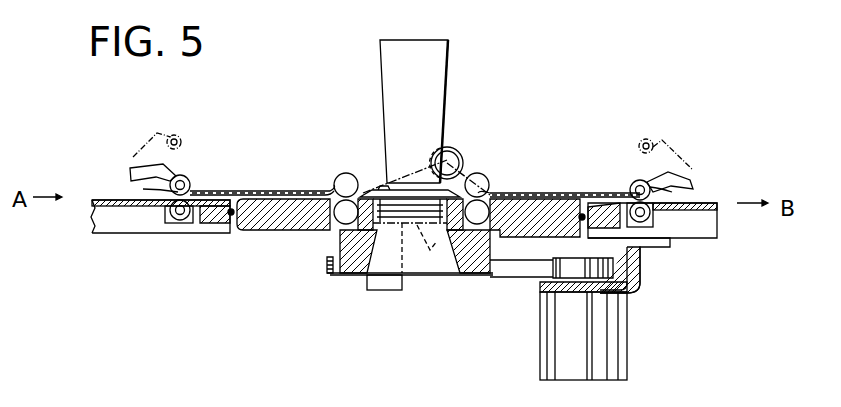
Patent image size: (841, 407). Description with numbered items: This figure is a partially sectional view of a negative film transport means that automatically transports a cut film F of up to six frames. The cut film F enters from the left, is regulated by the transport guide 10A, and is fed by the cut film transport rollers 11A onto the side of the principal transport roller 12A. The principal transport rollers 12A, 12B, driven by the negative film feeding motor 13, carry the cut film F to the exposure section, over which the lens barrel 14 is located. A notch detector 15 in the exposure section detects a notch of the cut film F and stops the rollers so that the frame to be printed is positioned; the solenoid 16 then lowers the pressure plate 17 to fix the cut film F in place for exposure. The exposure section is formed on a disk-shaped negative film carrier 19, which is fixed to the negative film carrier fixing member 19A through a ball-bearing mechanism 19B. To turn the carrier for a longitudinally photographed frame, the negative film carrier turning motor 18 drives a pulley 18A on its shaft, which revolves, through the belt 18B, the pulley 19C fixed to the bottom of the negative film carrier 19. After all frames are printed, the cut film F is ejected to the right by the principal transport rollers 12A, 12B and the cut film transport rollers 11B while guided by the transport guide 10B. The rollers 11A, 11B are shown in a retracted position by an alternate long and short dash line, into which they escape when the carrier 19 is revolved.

The transport guide 10A is at (233, 190).
The transport guide 10B is at (570, 193).
The cut film transport rollers 11A is at (130, 170).
The cut film transport rollers 11B is at (680, 188).
The principal transport roller 12A is at (345, 172).
The principal transport roller 12B is at (484, 188).
The negative film feeding motor 13 is at (447, 147).
The lens barrel 14 is at (442, 62).
The notch detector 15 is at (417, 243).
The solenoid 16 is at (383, 291).
The pressure plate 17 is at (463, 177).
The negative film carrier turning motor 18 is at (540, 357).
The pulley 18A is at (593, 253).
The belt 18B is at (515, 272).
The negative film carrier 19 is at (253, 233).
The negative film carrier fixing member 19A is at (123, 225).
The ball-bearing mechanism 19B is at (230, 230).
The pulley 19C is at (340, 275).
The cut film F is at (143, 188).